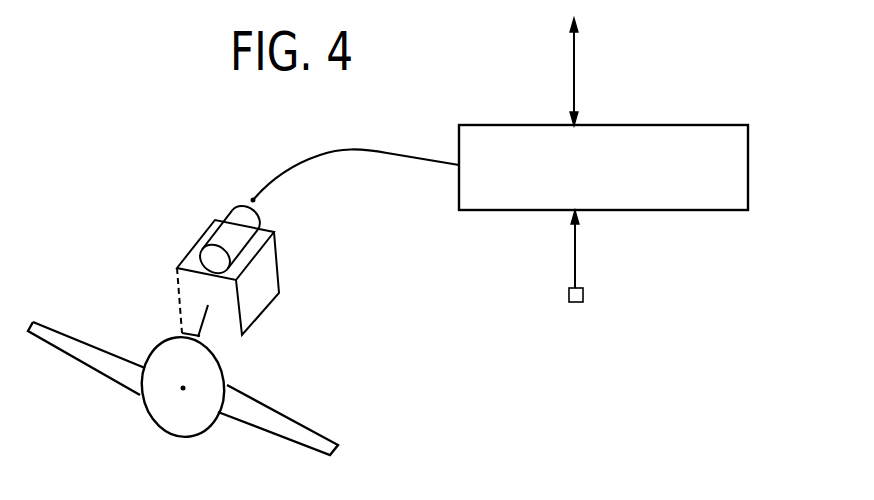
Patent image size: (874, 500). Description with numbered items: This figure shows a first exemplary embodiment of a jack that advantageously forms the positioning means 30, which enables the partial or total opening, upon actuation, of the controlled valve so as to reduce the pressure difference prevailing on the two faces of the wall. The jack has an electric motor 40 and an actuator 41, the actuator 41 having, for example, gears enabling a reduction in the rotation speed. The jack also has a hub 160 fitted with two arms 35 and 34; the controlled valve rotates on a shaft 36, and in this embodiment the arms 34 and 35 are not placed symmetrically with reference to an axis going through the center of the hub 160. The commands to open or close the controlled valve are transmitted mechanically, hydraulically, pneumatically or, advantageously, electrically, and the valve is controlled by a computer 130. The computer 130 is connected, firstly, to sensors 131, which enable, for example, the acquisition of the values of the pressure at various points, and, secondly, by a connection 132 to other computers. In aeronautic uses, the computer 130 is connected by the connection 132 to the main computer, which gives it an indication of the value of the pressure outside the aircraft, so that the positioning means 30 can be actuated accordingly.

The positioning means 30 is at (195, 390).
The arm 34 is at (320, 435).
The arm 35 is at (65, 358).
The shaft 36 is at (183, 388).
The electric motor 40 is at (237, 202).
The actuator 41 is at (280, 262).
The computer 130 is at (748, 177).
The sensors 131 is at (583, 296).
The connection 132 is at (574, 80).
The hub 160 is at (147, 422).